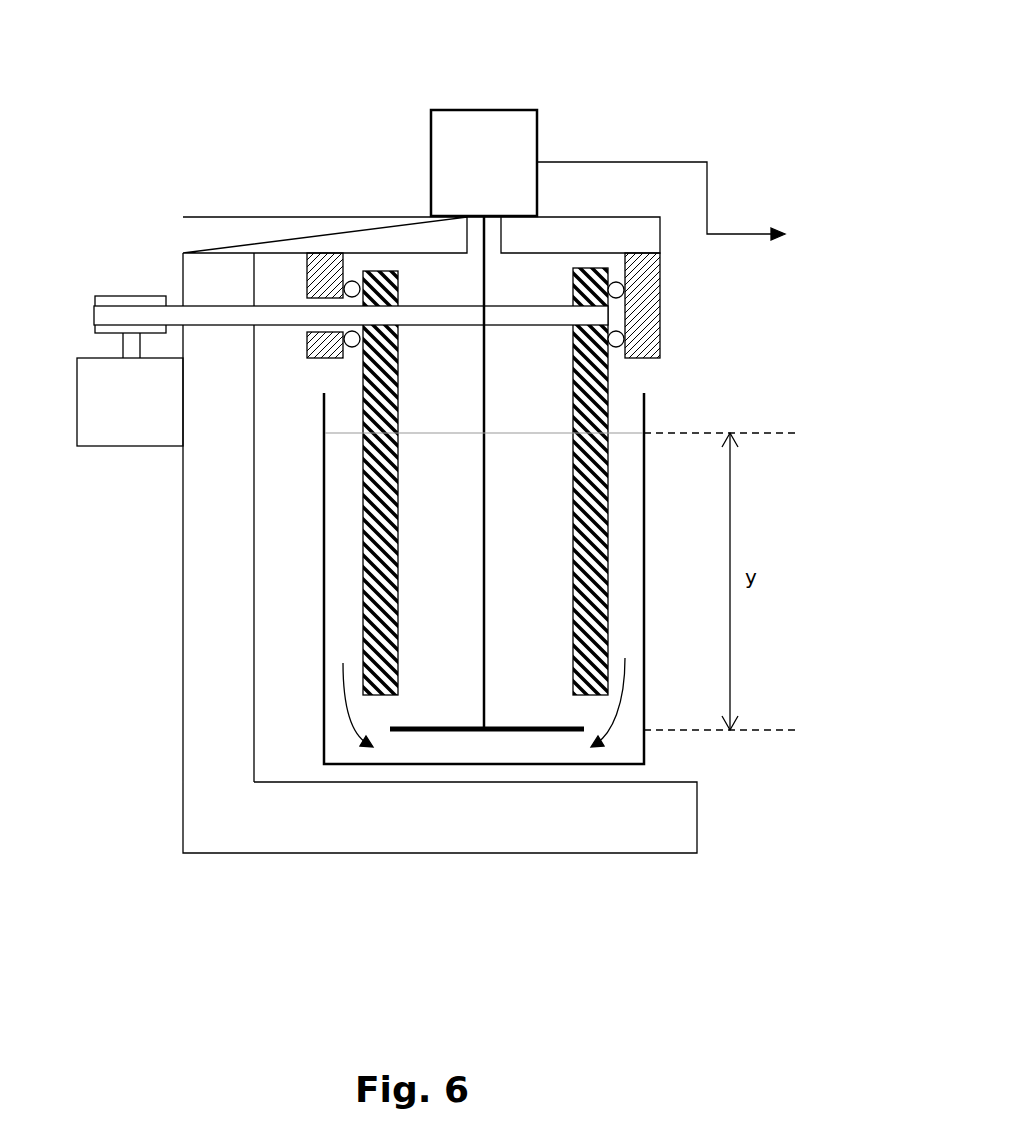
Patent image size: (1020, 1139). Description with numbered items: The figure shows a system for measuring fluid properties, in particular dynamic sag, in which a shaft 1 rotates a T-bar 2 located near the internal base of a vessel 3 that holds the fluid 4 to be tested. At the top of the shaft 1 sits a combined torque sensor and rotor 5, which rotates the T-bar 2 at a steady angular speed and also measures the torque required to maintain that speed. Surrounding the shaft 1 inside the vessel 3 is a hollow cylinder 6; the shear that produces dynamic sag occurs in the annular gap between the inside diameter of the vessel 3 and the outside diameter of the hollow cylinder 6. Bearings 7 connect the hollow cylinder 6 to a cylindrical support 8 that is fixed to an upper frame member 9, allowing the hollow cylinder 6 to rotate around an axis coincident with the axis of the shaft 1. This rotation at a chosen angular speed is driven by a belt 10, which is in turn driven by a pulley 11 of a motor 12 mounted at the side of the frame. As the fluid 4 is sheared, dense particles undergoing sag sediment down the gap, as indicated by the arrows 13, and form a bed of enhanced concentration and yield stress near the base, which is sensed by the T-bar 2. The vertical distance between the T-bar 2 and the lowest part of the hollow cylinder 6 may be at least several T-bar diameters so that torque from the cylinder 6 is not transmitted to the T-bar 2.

The shaft 1 is at (478, 281).
The T-bar 2 is at (538, 733).
The vessel 3 is at (322, 740).
The fluid 4 is at (438, 577).
The combined torque sensor and rotor 5 is at (483, 110).
The hollow cylinder 6 is at (362, 485).
The bearings 7 is at (620, 340).
The cylindrical support 8 is at (663, 267).
The upper frame member 9 is at (287, 215).
The belt 10 is at (282, 325).
The pulley 11 is at (133, 291).
The motor 12 is at (130, 389).
The arrows 13 is at (610, 735).